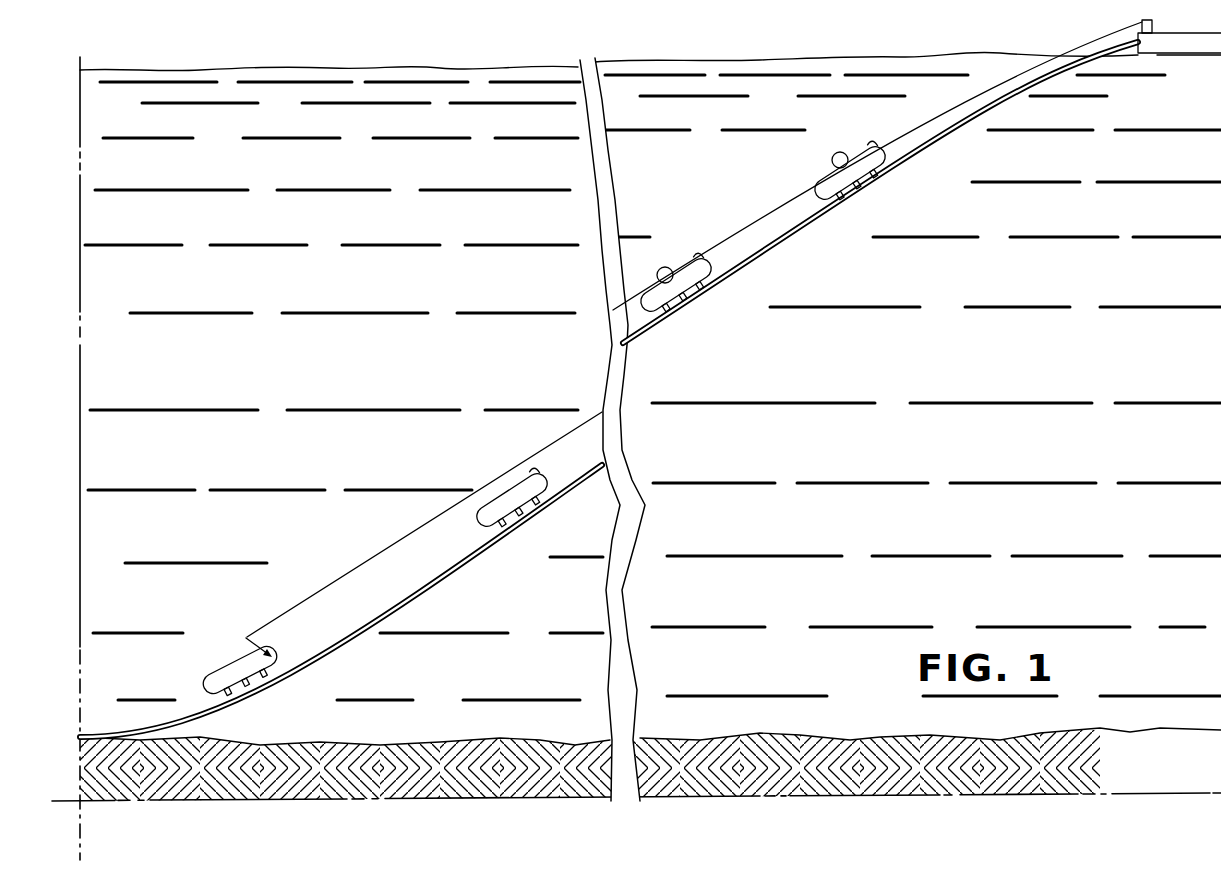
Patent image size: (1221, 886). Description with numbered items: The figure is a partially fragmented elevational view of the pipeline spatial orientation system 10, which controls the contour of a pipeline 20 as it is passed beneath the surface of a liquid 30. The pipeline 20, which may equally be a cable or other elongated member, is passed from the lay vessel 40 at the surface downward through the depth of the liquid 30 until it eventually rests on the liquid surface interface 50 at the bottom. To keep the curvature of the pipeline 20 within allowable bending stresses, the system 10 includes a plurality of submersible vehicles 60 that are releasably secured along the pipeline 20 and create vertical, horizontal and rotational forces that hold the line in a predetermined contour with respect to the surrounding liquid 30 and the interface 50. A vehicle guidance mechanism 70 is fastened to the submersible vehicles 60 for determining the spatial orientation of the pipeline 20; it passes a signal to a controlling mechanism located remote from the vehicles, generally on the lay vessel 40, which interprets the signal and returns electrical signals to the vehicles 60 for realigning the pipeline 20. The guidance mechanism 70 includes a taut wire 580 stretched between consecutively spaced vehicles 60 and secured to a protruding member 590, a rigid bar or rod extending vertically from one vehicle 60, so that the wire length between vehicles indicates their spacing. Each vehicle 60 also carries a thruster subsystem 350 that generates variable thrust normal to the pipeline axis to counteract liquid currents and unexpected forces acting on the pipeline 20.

The pipeline spatial orientation system 10 is at (711, 228).
The pipeline 20 is at (928, 147).
The liquid 30 is at (349, 446).
The vehicle or lay vessel 40 is at (1186, 54).
The liquid surface interface 50 is at (832, 733).
The submersible vehicle 60 is at (273, 660).
The vehicle guidance mechanism 70 is at (525, 488).
The thruster subsystem 350 is at (668, 281).
The taut wire 580 is at (778, 204).
The protruding member 590 is at (246, 638).